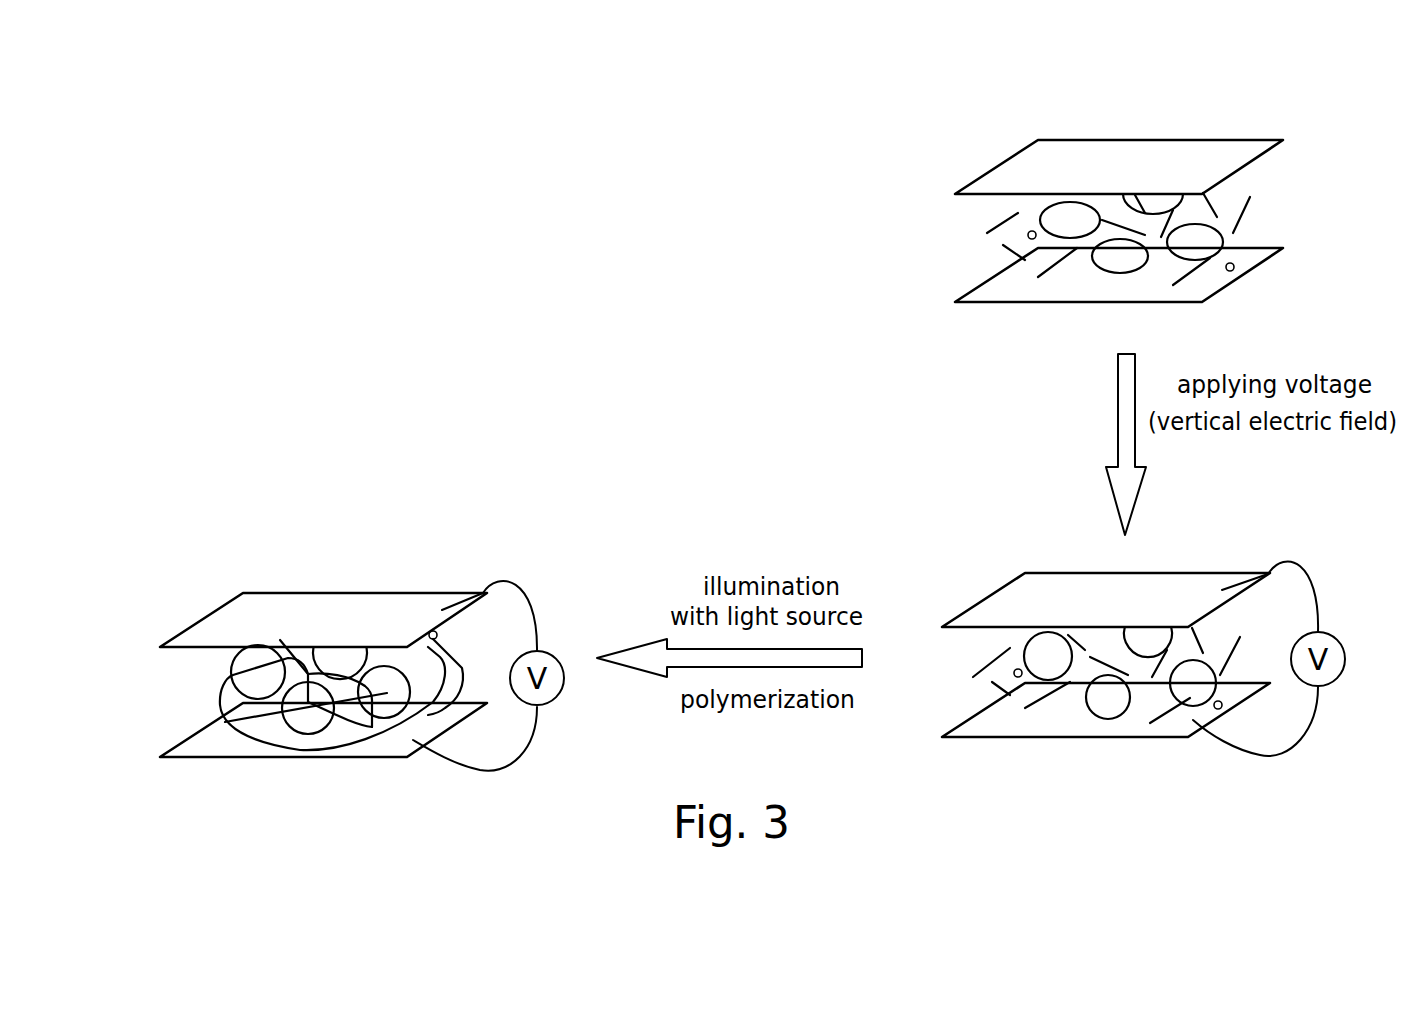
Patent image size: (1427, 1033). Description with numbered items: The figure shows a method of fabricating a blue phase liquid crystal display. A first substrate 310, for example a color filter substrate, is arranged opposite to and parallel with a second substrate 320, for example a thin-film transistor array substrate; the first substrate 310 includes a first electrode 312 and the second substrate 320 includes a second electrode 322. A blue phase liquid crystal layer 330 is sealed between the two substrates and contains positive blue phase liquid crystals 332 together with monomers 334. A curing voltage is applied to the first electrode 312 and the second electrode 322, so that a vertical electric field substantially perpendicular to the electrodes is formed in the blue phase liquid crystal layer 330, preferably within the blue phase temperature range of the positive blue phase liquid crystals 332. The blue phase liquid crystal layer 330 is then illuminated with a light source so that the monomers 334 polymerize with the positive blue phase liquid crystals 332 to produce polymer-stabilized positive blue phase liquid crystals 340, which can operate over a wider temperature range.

The first substrate 310 is at (1104, 123).
The first electrode 312 is at (1199, 153).
The second substrate 320 is at (1095, 303).
The second electrode 322 is at (1033, 287).
The blue phase liquid crystal layer 330 is at (1174, 450).
The positive blue phase liquid crystals 332 is at (1068, 218).
The monomers 334 is at (1190, 273).
The polymer-stabilized positive blue phase liquid crystals 340 is at (310, 727).